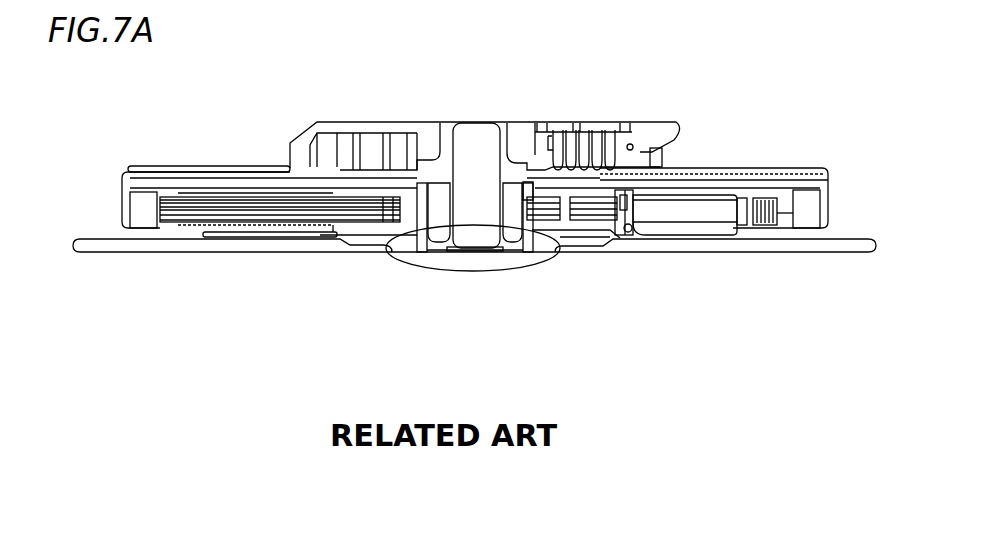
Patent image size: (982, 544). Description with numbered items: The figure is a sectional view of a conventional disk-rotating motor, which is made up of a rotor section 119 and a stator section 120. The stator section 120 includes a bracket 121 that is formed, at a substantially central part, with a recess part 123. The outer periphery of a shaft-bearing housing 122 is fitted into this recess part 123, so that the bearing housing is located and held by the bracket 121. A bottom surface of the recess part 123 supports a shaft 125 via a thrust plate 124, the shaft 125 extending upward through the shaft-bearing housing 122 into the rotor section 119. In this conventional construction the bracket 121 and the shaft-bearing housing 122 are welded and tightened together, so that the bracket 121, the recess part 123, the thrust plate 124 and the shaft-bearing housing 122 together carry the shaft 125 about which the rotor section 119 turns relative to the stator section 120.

The rotor section 119 is at (197, 162).
The stator section 120 is at (777, 257).
The bracket 121 is at (663, 243).
The shaft-bearing housing 122 is at (421, 238).
The recess part 123 is at (522, 253).
The thrust plate 124 is at (480, 248).
The shaft 125 is at (485, 137).